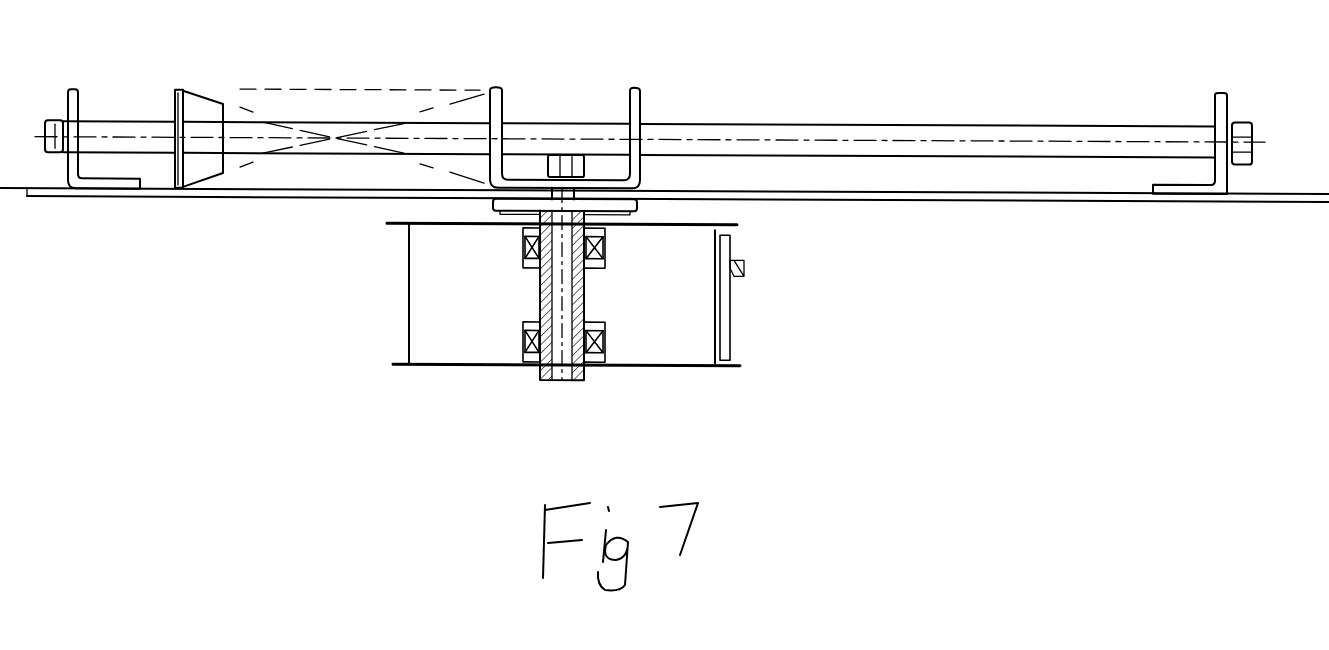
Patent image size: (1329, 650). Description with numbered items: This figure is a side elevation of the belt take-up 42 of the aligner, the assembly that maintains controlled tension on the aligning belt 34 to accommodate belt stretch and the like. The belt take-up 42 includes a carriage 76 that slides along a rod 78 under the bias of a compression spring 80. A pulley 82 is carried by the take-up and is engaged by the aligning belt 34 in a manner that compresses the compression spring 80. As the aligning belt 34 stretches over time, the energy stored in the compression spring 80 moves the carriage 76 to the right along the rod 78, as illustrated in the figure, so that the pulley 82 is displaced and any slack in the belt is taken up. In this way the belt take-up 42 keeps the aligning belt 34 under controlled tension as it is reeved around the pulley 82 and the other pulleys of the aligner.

The aligning belt 34 is at (730, 299).
The belt take-up 42 is at (640, 370).
The carriage 76 is at (635, 109).
The rod 78 is at (930, 121).
The compression spring 80 is at (301, 86).
The pulley 82 is at (435, 365).